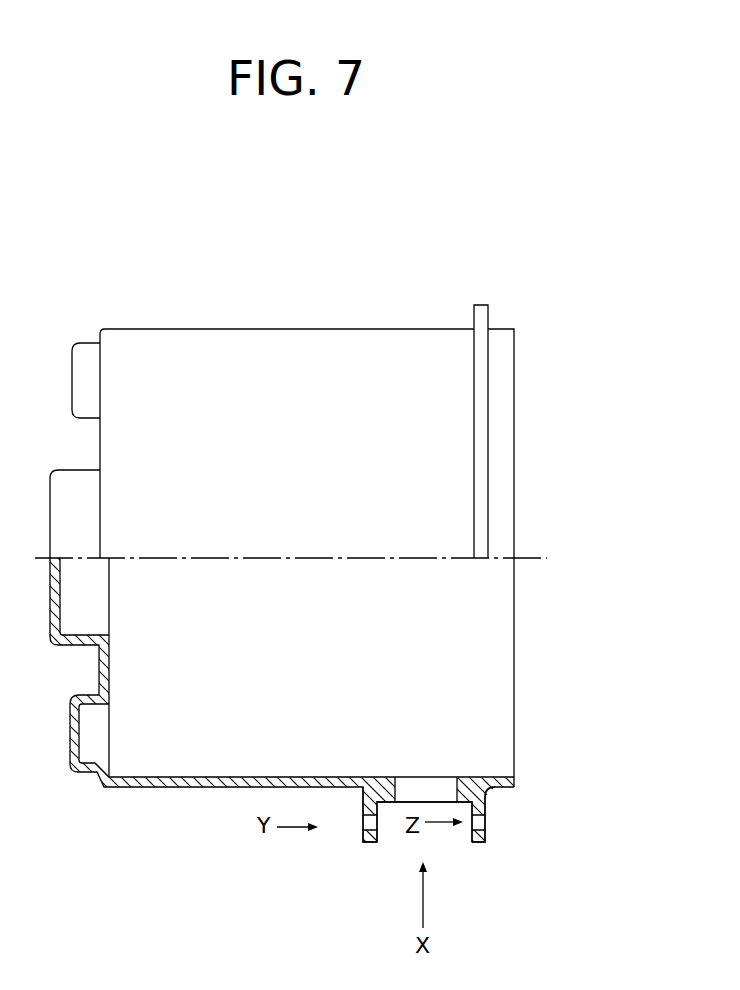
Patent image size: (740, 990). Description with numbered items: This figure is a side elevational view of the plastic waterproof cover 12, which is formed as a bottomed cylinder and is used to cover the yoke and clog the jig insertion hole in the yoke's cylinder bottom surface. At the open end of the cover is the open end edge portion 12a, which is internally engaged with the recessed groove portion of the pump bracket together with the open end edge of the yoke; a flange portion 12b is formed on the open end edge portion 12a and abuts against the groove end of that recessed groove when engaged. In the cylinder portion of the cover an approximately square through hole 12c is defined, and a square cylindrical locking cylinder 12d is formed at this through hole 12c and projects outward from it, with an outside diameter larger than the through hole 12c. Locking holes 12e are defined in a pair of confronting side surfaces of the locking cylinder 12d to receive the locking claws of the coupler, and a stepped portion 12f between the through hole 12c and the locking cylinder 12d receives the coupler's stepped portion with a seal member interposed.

The waterproof cover 12 is at (356, 316).
The open end edge portion 12a is at (502, 337).
The flange portion 12b is at (483, 312).
The through hole 12c is at (445, 795).
The locking cylinder 12d is at (478, 852).
The locking holes 12e is at (360, 822).
The stepped portion 12f is at (387, 803).